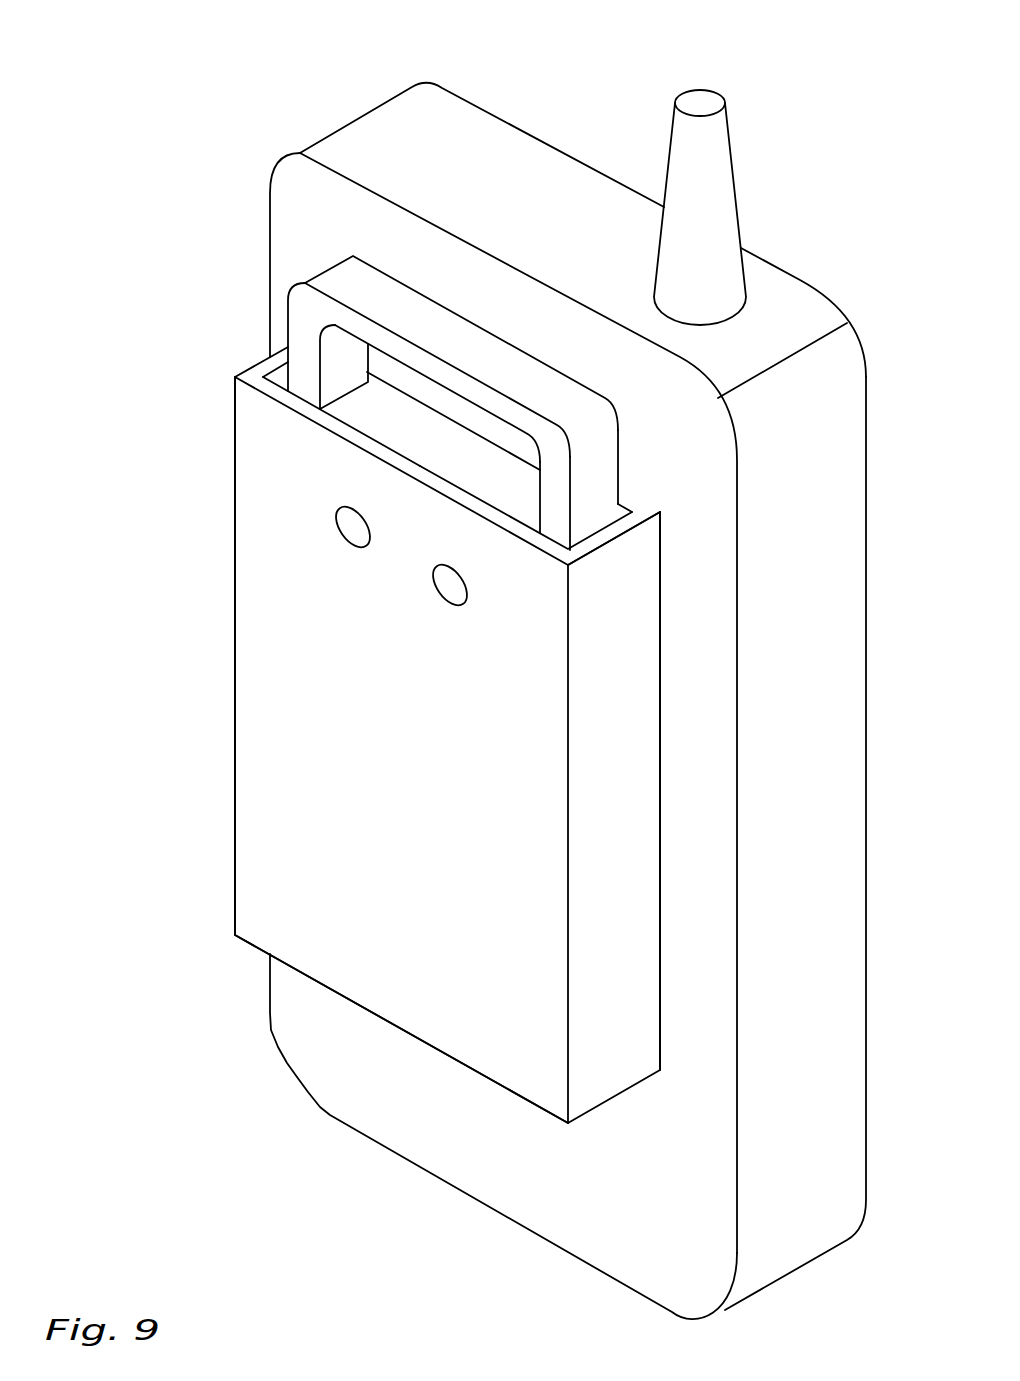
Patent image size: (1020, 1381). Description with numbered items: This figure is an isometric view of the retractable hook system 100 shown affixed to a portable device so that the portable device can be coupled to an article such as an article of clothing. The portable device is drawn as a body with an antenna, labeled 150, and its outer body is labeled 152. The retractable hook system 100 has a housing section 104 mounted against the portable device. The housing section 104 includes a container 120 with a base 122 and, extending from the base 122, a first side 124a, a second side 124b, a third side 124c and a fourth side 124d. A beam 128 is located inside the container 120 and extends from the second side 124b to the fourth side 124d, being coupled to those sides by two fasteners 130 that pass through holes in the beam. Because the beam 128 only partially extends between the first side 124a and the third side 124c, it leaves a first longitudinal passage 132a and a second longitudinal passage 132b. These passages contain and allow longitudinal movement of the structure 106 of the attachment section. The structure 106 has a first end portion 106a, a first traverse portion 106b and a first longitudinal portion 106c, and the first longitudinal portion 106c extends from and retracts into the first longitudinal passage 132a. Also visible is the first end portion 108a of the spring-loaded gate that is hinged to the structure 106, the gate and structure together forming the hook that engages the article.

The retractable hook system 100 is at (182, 513).
The housing section 104 is at (708, 712).
The structure 106 is at (517, 367).
The first end portion 106a is at (286, 300).
The first traverse portion 106b is at (473, 350).
The first longitudinal portion 106c is at (603, 467).
The first end portion 108a is at (340, 370).
The container 120 is at (642, 658).
The base 122 is at (381, 1018).
The first side 124a is at (618, 775).
The second side 124b is at (305, 805).
The third side 124c is at (235, 712).
The fourth side 124d is at (662, 593).
The beam 128 is at (460, 455).
The fasteners 130 is at (352, 532).
The first longitudinal passage 132a is at (530, 517).
The second longitudinal passage 132b is at (277, 378).
The mobile device 150 is at (606, 98).
The housing of mobile device 152 is at (702, 895).